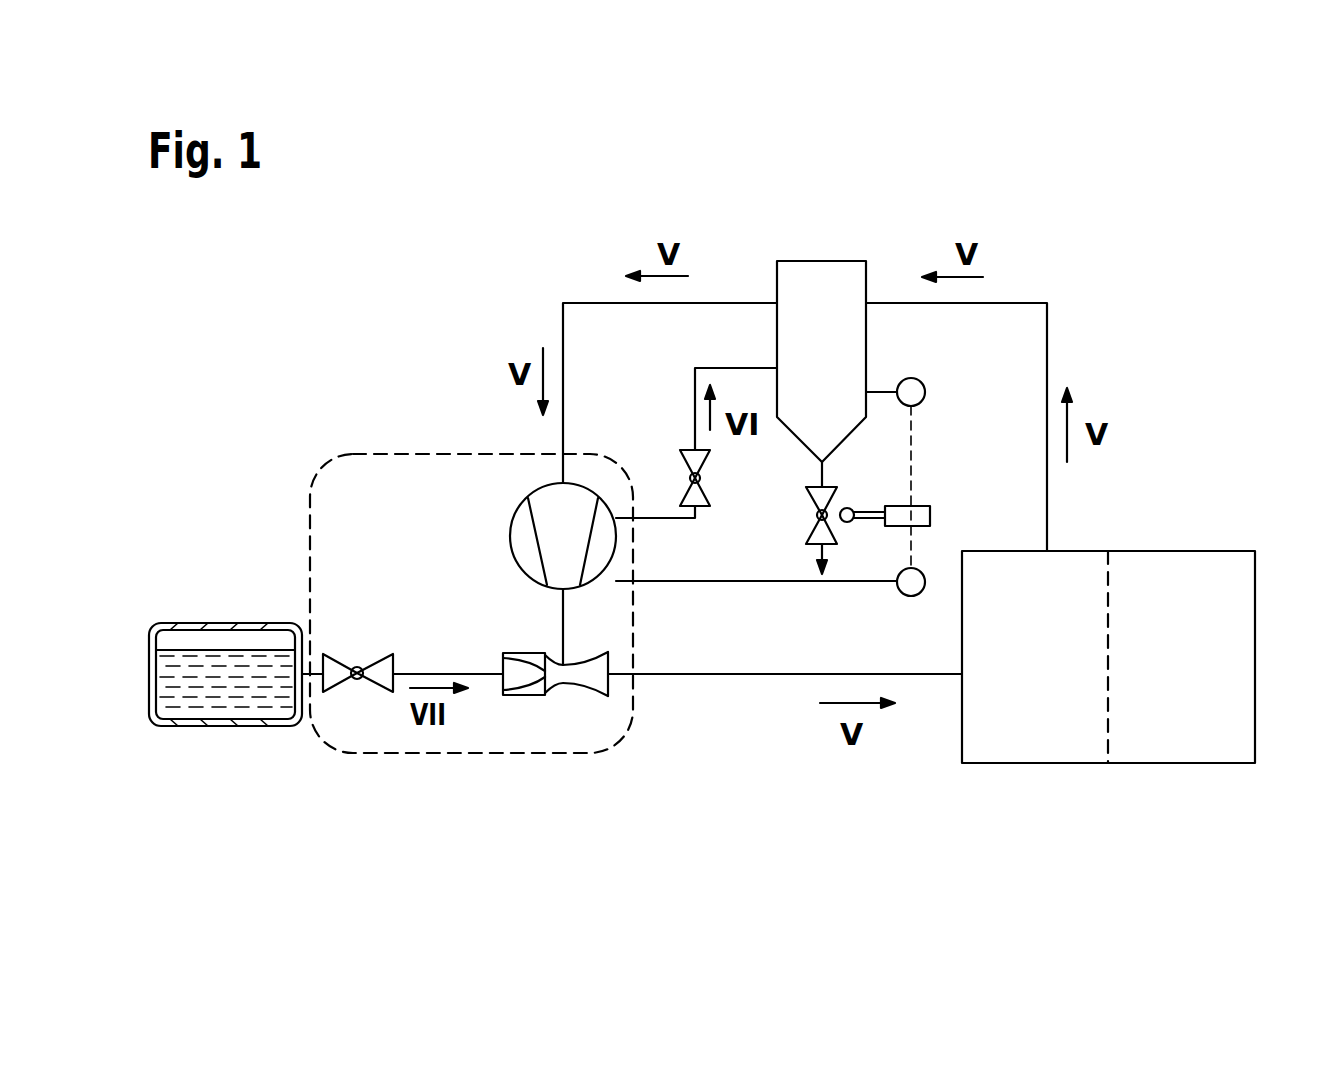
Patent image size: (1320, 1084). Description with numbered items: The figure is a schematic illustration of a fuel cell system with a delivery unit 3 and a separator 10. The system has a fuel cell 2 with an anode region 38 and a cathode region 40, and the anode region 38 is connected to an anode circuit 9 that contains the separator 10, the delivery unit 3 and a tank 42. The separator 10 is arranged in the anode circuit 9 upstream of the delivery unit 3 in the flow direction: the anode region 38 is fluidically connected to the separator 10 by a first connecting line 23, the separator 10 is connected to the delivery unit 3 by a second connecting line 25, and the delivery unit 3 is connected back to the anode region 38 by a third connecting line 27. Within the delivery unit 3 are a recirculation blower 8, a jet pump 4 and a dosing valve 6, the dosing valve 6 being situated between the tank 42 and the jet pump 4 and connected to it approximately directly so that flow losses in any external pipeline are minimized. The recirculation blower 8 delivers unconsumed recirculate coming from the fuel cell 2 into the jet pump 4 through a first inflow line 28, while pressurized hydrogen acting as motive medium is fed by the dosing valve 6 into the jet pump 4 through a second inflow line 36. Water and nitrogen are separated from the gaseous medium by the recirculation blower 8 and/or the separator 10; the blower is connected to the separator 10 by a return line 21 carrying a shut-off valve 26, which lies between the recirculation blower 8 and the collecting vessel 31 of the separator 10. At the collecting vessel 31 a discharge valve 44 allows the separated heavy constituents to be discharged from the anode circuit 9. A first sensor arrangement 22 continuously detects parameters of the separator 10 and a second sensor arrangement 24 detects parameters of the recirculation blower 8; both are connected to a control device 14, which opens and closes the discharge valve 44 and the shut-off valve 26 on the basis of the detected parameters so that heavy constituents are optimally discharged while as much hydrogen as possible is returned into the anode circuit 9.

The fuel cell 2 is at (1158, 777).
The delivery unit 3 is at (365, 452).
The jet pump 4 is at (537, 688).
The dosing valve 6 is at (357, 667).
The recirculation blower 8 is at (510, 536).
The anode circuit 9 is at (786, 688).
The separator 10 is at (798, 248).
The control device 14 is at (930, 516).
The return line 21 is at (695, 386).
The first sensor arrangement 22 is at (905, 378).
The first connecting line 23 is at (1047, 318).
The second sensor arrangement 24 is at (905, 598).
The second connecting line 25 is at (563, 318).
The shut-off valve 26 is at (700, 480).
The third connecting line 27 is at (688, 676).
The first inflow line 28 is at (563, 616).
The collecting vessel 31 is at (838, 310).
The second inflow line 36 is at (503, 677).
The anode region 38 is at (1037, 745).
The cathode region 40 is at (1200, 560).
The tank 42 is at (222, 627).
The discharge valve 44 is at (817, 515).